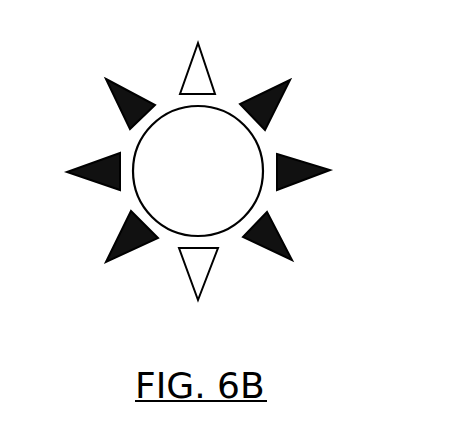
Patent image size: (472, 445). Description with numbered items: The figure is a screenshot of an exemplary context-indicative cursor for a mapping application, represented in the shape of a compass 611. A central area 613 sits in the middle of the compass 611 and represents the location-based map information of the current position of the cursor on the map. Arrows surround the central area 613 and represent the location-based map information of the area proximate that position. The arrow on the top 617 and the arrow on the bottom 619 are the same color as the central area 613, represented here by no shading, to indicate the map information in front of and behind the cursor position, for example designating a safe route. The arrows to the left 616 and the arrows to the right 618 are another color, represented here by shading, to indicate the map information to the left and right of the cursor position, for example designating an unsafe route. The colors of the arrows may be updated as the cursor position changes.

The compass 611 is at (262, 20).
The central area 613 is at (244, 165).
The arrows to the left 616 is at (188, 170).
The arrow on the top 617 is at (168, 59).
The arrows to the right 618 is at (286, 235).
The arrow on the bottom 619 is at (172, 284).